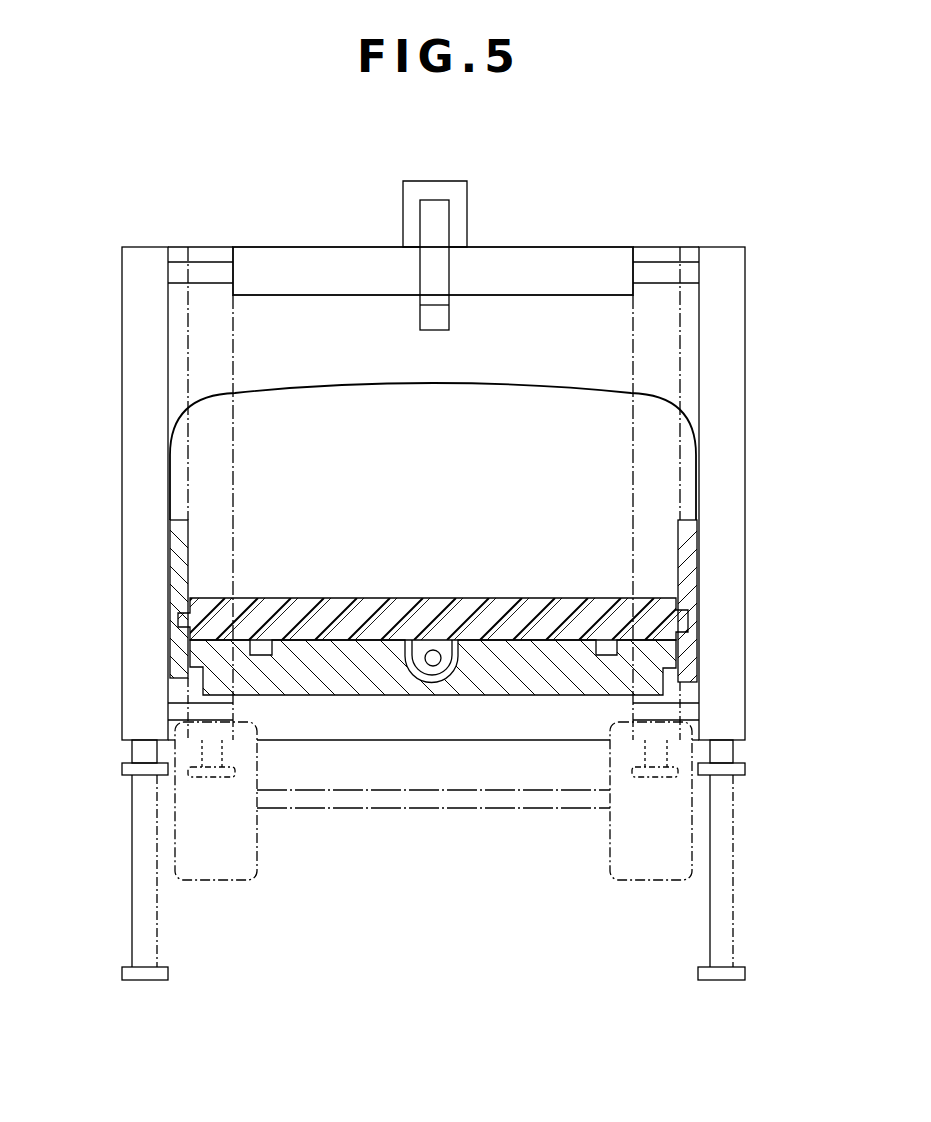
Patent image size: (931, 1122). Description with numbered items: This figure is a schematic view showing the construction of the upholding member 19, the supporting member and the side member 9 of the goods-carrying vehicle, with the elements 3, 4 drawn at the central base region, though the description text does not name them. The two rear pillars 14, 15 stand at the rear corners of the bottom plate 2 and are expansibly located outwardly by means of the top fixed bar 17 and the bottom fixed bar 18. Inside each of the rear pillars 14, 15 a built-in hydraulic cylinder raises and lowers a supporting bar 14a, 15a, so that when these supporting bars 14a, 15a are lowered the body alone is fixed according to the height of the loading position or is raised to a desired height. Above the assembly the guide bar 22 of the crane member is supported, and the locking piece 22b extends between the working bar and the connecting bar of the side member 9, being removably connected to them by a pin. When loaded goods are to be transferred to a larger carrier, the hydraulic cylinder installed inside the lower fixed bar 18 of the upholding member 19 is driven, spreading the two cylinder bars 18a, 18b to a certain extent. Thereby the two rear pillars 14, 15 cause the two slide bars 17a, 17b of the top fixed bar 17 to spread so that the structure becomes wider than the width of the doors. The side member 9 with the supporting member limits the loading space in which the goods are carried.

The bottom plate 2 is at (512, 692).
The locating pin hole 3 is at (436, 664).
The upper mold plate 4 is at (676, 610).
The side member 9 is at (695, 662).
The rear pillar 14 is at (131, 313).
The supporting bar 14a is at (128, 770).
The rear pillar 15 is at (737, 327).
The supporting bar 15a is at (737, 770).
The top fixed bar 17 is at (569, 256).
The slide bar 17a is at (206, 268).
The slide bar 17b is at (689, 268).
The bottom fixed bar 18 is at (368, 730).
The cylinder bar 18a is at (180, 716).
The cylinder bar 18b is at (690, 717).
The upholding member 19 is at (748, 440).
The guide bar 22 is at (426, 188).
The locking piece 22b is at (427, 214).